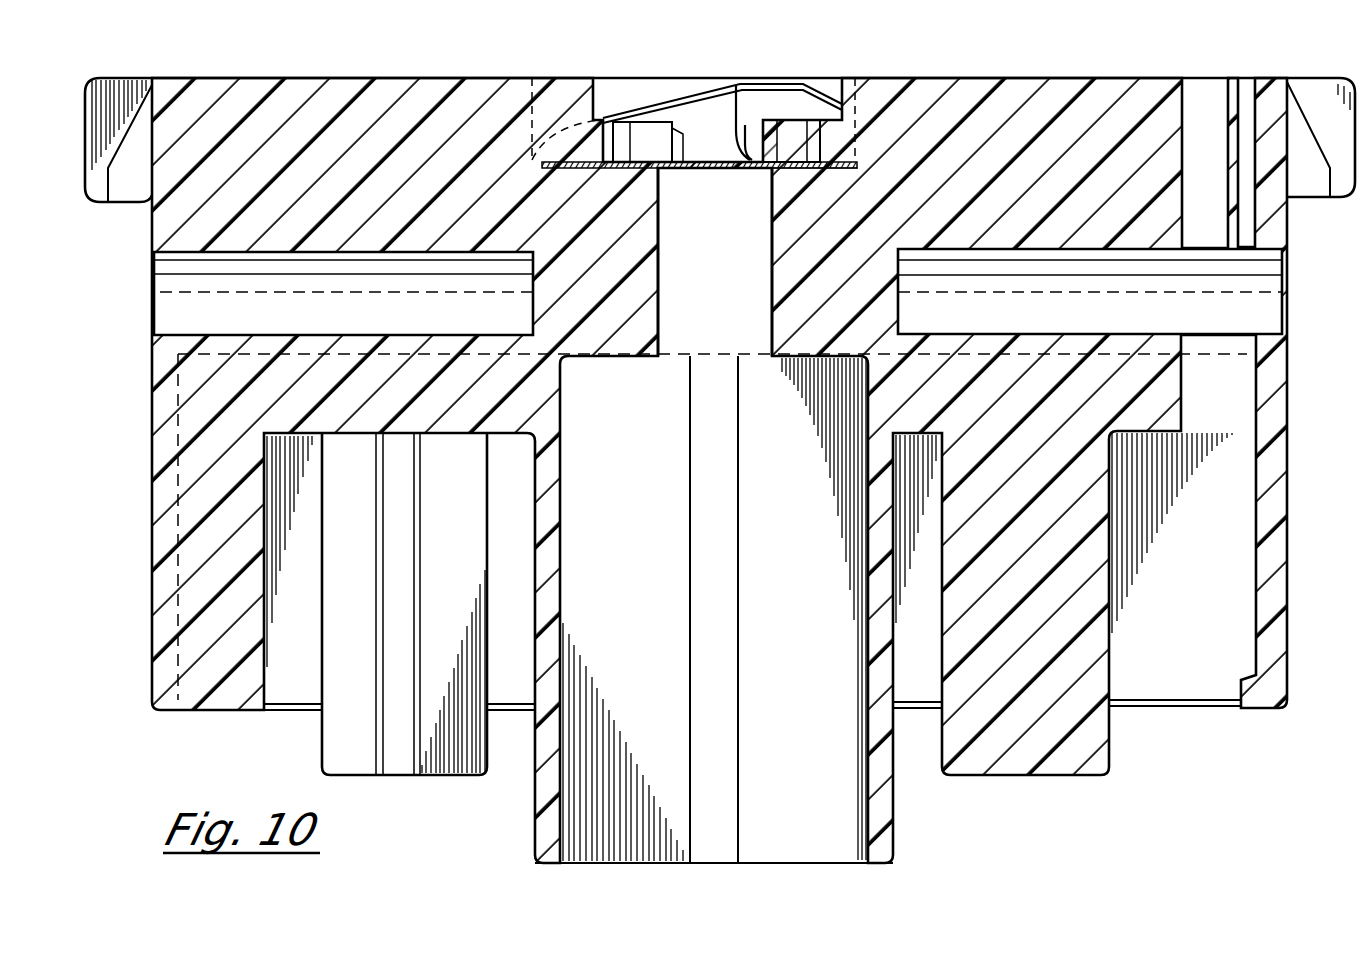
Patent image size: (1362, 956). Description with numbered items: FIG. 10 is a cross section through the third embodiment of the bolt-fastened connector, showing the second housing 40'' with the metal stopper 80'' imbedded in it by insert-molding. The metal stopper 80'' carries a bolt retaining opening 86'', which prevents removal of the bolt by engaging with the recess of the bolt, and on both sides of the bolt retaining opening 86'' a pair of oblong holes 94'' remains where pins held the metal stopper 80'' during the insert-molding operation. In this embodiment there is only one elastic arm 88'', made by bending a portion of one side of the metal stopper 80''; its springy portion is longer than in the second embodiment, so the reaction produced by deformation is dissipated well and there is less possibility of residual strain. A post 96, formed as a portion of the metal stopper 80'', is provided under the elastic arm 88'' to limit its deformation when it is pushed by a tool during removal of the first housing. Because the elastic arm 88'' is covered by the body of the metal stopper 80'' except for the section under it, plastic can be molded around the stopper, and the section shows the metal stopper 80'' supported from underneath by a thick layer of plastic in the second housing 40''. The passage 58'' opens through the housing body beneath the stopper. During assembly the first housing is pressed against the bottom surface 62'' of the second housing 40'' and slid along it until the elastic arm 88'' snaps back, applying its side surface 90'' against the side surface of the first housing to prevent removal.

The second housing 40'' is at (720, 443).
The dispensing passage 58'' is at (715, 262).
The bottom surface 62'' is at (847, 75).
The metal stopper 80'' is at (789, 213).
The bolt retaining opening 86'' is at (699, 187).
The elastic arm 88'' is at (722, 77).
The side surface 90'' is at (800, 96).
The oblong holes 94'' is at (633, 97).
The post 96 is at (737, 140).